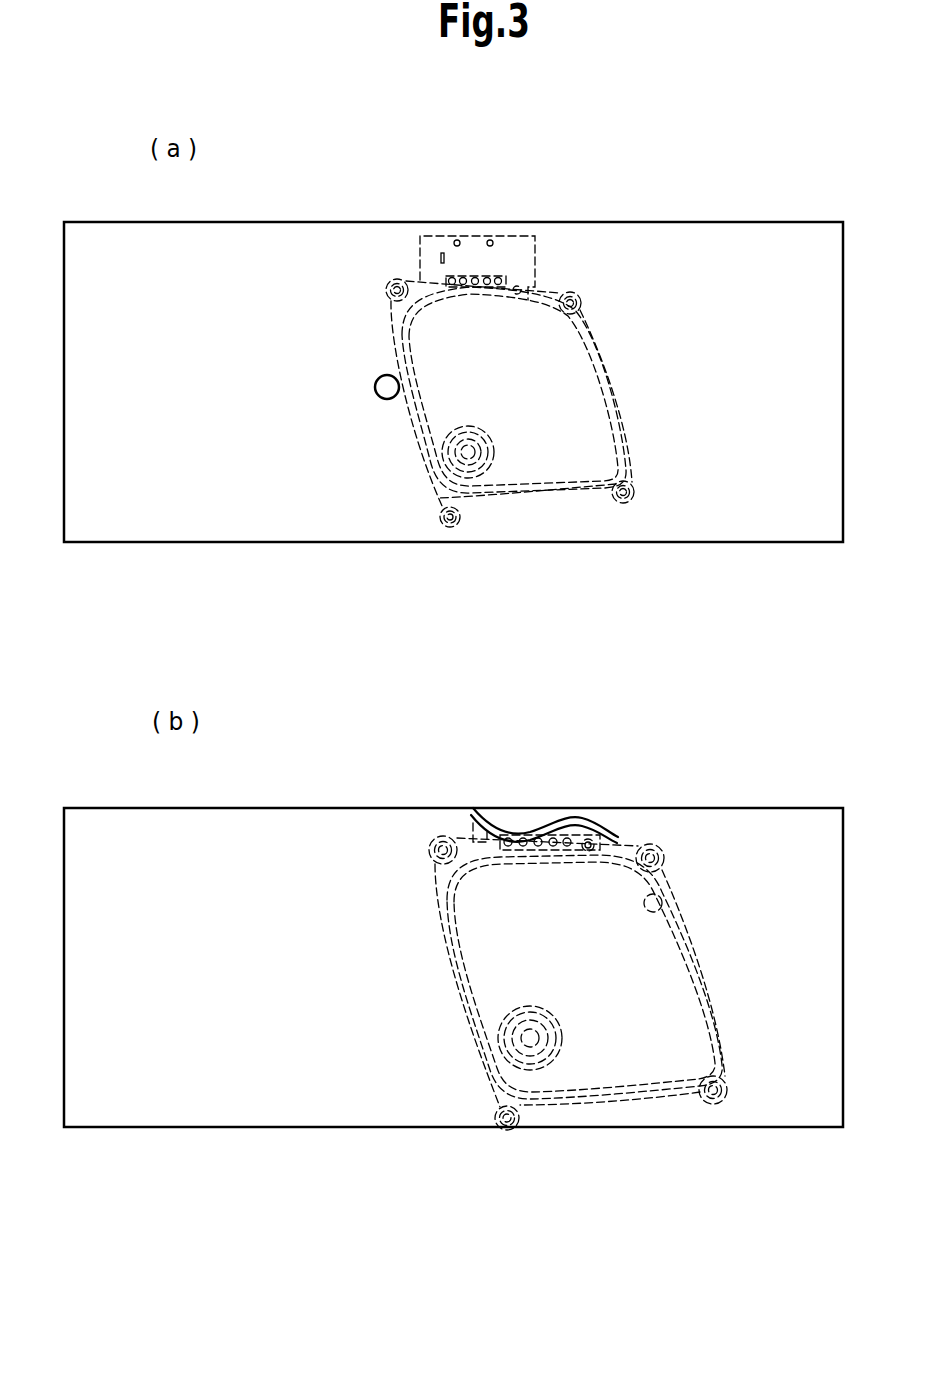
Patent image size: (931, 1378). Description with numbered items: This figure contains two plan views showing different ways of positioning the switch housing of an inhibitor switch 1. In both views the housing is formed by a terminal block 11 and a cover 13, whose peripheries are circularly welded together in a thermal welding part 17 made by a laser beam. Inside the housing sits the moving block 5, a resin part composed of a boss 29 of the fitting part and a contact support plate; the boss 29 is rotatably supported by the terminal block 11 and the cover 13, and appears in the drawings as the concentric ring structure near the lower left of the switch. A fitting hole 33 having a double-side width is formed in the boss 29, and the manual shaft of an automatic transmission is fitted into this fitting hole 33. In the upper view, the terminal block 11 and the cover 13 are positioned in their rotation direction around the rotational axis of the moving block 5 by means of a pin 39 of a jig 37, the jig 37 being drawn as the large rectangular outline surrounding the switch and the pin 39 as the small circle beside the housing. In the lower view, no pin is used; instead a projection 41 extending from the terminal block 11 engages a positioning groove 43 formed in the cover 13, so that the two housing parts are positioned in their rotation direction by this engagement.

The inhibitor switch 1 is at (555, 284).
The moving block 5 is at (440, 475).
The terminal block 11 is at (484, 480).
The cover 13 is at (554, 468).
The thermal welding part 17 is at (616, 375).
The boss 29 is at (497, 513).
The fitting hole 33 is at (440, 447).
The jig 37 is at (392, 222).
The pin 39 is at (379, 375).
The projection 41 is at (670, 891).
The positioning groove 43 is at (677, 883).